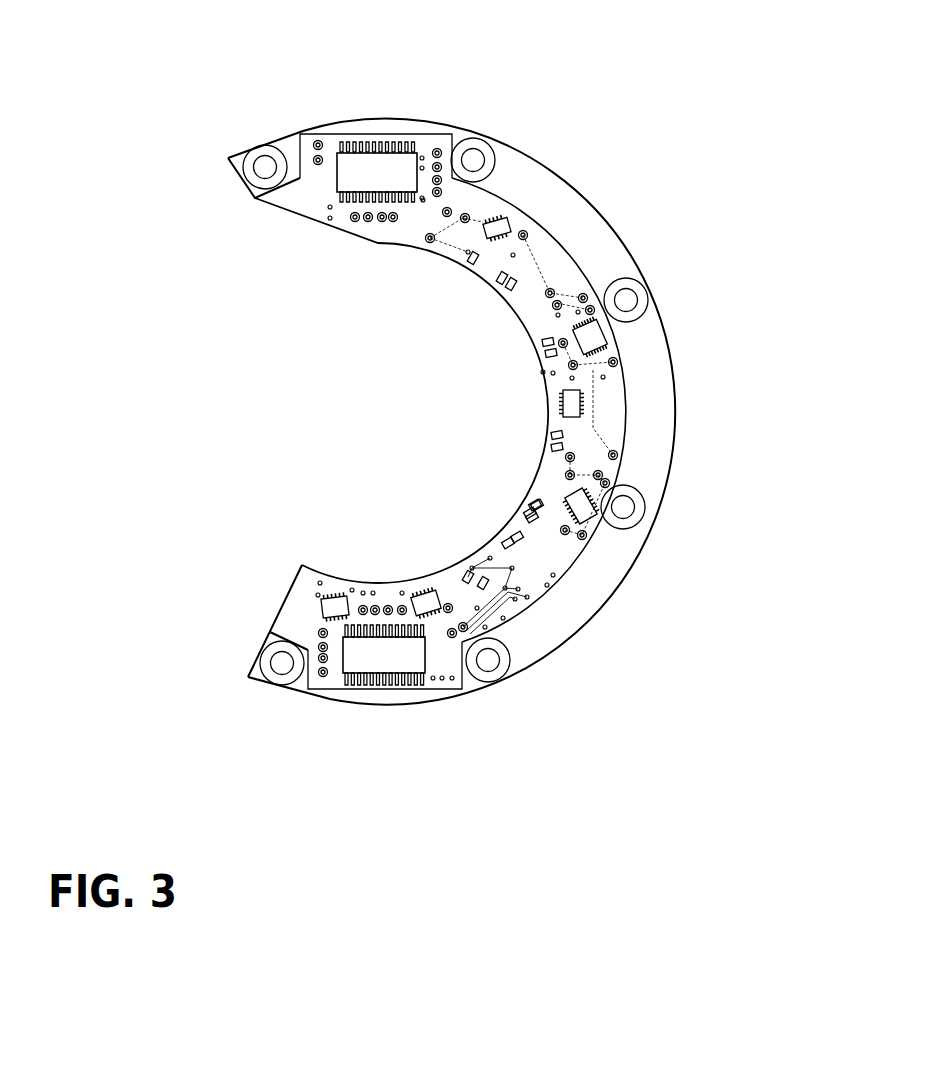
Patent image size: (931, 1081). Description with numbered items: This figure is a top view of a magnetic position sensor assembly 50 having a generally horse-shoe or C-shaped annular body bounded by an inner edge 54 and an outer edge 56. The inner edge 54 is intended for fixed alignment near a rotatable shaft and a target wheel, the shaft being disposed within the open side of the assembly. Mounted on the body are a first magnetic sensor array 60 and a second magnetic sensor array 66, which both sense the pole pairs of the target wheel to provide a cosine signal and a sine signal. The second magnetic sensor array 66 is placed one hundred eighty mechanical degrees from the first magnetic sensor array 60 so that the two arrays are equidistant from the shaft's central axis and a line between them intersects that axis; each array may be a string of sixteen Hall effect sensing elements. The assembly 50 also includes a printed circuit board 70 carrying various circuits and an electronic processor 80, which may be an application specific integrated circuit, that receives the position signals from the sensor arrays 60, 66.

The magnetic position sensor assembly 50 is at (672, 242).
The inner edge 54 is at (525, 330).
The outer edge 56 is at (553, 177).
The first magnetic sensor array 60 is at (382, 163).
The second magnetic sensor array 66 is at (393, 653).
The printed circuit board 70 is at (540, 570).
The electronic processor 80 is at (583, 338).